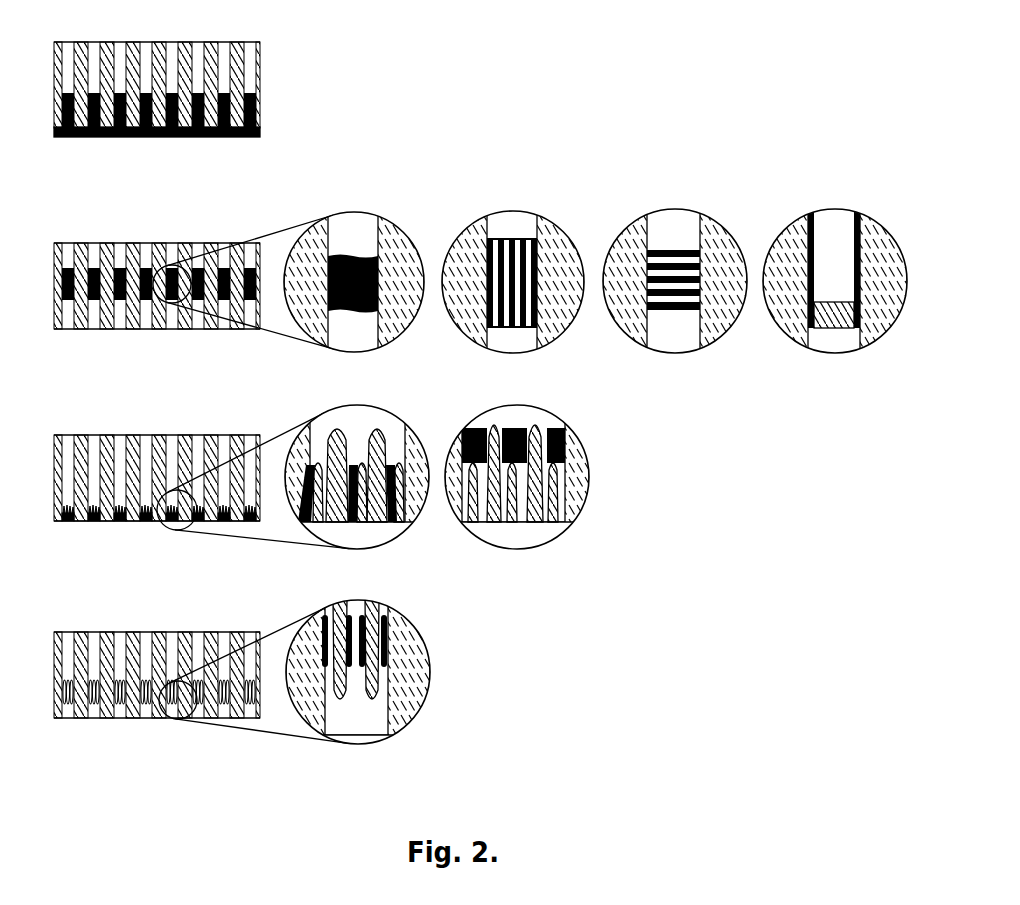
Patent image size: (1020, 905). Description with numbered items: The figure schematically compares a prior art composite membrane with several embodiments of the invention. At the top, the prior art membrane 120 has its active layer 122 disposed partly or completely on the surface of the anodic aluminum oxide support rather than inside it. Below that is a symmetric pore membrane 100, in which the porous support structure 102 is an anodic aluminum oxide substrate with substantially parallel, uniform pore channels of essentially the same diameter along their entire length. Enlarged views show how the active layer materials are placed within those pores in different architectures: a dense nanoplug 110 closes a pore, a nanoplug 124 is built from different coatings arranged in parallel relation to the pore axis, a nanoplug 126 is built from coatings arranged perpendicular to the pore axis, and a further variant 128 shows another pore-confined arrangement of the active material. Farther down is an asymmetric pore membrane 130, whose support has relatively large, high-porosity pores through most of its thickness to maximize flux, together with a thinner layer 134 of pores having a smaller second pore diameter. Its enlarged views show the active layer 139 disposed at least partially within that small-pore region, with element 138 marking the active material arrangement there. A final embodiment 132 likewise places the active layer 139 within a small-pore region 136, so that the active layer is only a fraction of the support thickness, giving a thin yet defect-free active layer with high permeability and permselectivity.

The prior art membrane 120 is at (272, 58).
The active layer 122 is at (258, 127).
The symmetric pore membrane 100 is at (480, 280).
The porous support structure 102 is at (108, 248).
The nanoplug 110 is at (357, 252).
The nanoplug 124 is at (513, 330).
The nanoplug 126 is at (672, 312).
The electrode with side walls and filled bottom 128 is at (832, 318).
The asymmetric pore membrane 130 is at (166, 424).
The layer having second pore diameter 134 is at (470, 517).
The black conductive blocks between pillars 138 is at (410, 512).
The active layer 139 is at (563, 450).
The structure with hanging finger electrodes 132 is at (159, 630).
The region having second pore diameter 136 is at (415, 677).